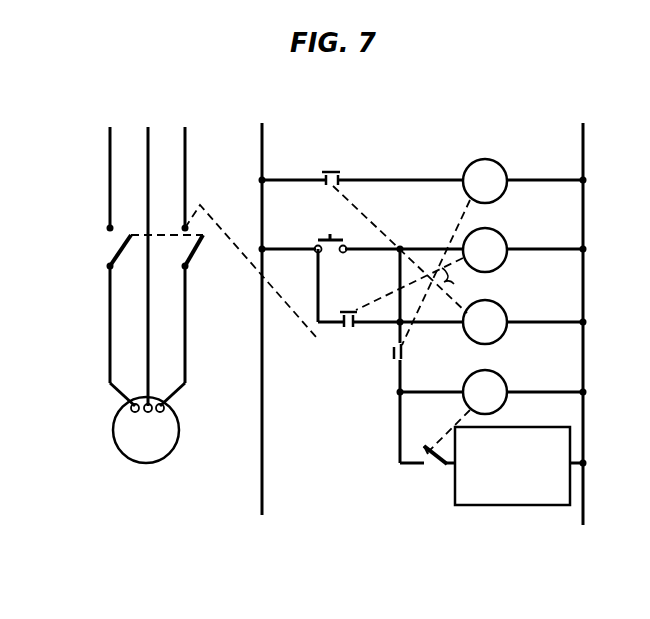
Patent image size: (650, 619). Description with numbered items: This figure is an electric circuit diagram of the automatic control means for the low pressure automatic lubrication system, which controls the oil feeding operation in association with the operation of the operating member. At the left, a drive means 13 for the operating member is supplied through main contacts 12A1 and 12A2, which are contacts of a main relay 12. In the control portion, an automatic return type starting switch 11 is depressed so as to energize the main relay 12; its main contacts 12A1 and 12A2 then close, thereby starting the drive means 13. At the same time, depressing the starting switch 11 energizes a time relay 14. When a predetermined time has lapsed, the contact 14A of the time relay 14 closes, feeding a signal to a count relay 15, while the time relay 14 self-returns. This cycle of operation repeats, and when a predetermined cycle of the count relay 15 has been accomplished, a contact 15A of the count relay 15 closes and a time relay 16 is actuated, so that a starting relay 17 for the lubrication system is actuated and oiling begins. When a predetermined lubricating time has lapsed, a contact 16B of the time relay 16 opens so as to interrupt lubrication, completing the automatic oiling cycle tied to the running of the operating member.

The starting switch 11 is at (322, 240).
The main relay 12 is at (500, 235).
The main contact 12A1 is at (120, 243).
The main contact 12A2 is at (343, 308).
The drive means 13 is at (180, 420).
The time relay 14 is at (500, 307).
The contact of the time relay 14A is at (331, 171).
The count relay 15 is at (500, 166).
The contact of the count relay 15A is at (392, 356).
The time relay 16 is at (500, 377).
The contact of the time relay 16B is at (436, 470).
The starting relay 17 is at (528, 505).